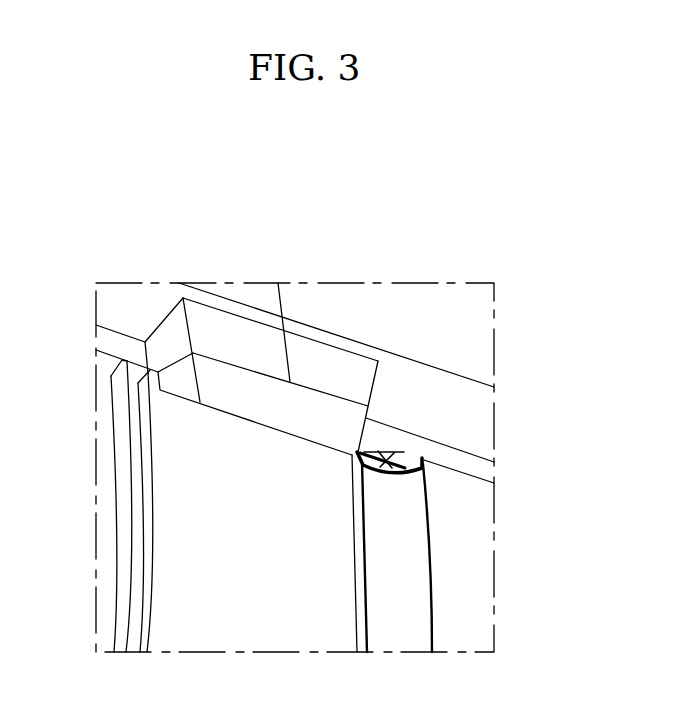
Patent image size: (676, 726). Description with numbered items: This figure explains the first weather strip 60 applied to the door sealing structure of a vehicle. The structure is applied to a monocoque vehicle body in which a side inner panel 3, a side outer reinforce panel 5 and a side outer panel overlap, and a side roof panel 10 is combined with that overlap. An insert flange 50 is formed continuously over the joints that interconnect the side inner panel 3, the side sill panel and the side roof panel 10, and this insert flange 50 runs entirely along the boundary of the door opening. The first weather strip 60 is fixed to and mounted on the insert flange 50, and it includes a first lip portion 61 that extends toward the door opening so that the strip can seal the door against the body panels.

The side inner panel 3 is at (253, 633).
The side outer reinforce panel 5 is at (220, 372).
The side roof panel 10 is at (133, 302).
The insert flange 50 is at (115, 378).
The first weather strip 60 is at (437, 511).
The first lip portion 61 is at (422, 458).